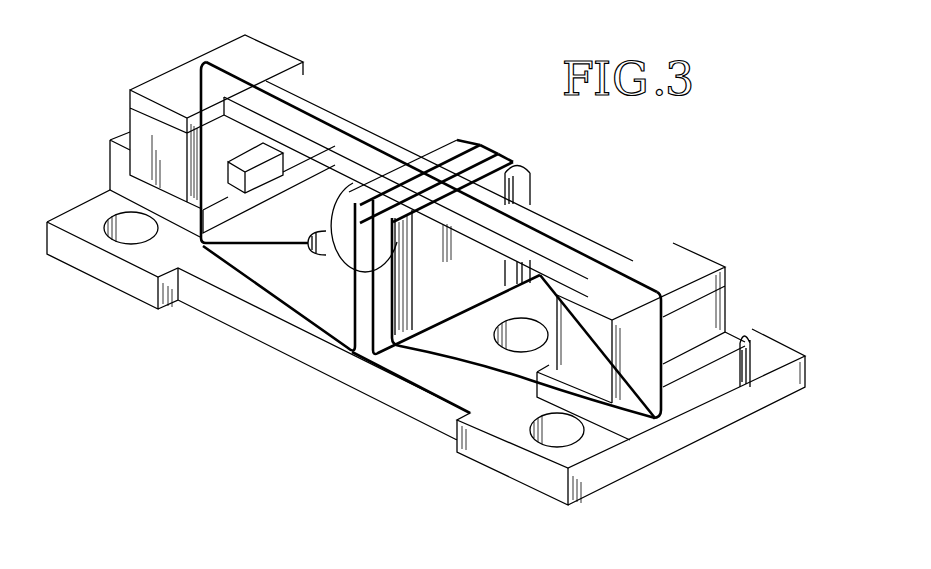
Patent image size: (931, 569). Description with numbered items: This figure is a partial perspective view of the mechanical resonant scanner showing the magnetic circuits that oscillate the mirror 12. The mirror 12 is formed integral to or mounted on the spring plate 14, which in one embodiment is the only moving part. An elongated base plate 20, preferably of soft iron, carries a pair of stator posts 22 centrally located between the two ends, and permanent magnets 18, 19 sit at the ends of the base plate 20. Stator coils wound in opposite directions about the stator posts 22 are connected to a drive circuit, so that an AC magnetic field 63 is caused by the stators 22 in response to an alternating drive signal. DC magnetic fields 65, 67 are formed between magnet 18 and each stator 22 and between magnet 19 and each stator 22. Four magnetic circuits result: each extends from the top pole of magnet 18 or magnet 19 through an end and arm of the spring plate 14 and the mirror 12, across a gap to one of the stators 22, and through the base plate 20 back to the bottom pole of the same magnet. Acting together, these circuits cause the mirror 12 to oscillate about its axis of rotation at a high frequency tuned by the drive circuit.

The mirror 12 is at (443, 143).
The spring plate 14 is at (368, 127).
The permanent magnet 18 is at (723, 300).
The permanent magnet 19 is at (128, 106).
The base plate 20 is at (773, 348).
The stator posts 22 is at (330, 287).
The AC magnetic field 63 is at (498, 152).
The DC magnetic field 65 is at (480, 143).
The DC magnetic field 67 is at (513, 160).